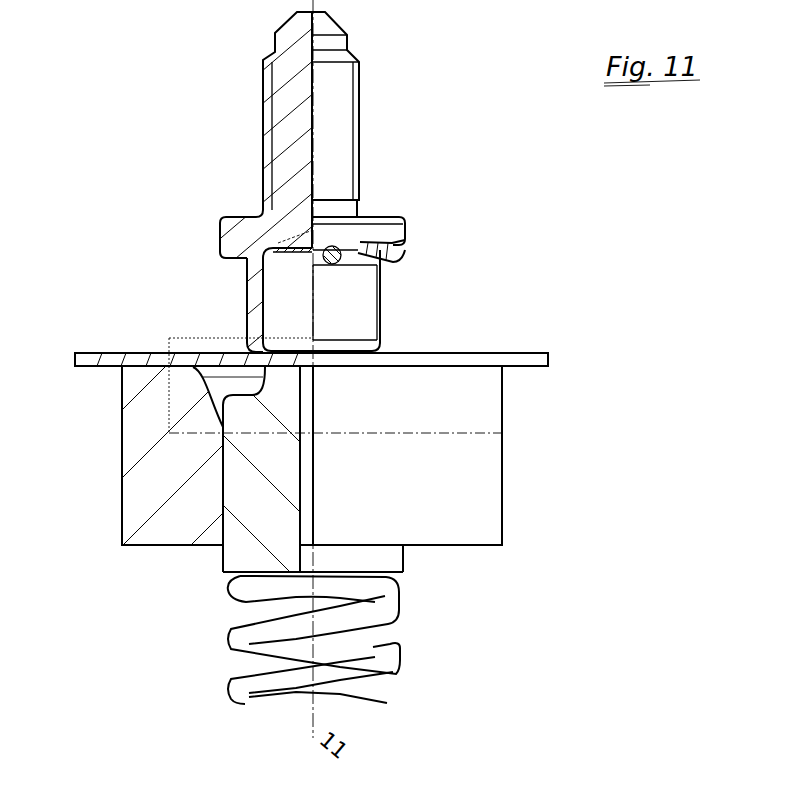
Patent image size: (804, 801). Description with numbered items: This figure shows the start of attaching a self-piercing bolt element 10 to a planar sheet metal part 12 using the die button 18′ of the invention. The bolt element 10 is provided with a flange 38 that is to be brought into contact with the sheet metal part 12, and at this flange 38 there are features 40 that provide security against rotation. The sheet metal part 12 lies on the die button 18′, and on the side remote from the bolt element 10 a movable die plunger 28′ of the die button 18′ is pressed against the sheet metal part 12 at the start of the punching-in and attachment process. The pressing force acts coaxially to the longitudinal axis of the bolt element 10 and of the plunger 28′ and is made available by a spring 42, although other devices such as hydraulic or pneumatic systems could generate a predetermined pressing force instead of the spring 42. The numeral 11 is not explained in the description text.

The bolt element 10 is at (423, 120).
The sleeve 11 is at (243, 302).
The sheet metal part 12 is at (525, 352).
The die button 18′ is at (207, 442).
The die plunger 28′ is at (237, 493).
The flange 38 is at (405, 217).
The features providing security against rotation 40 is at (400, 253).
The spring 42 is at (398, 658).